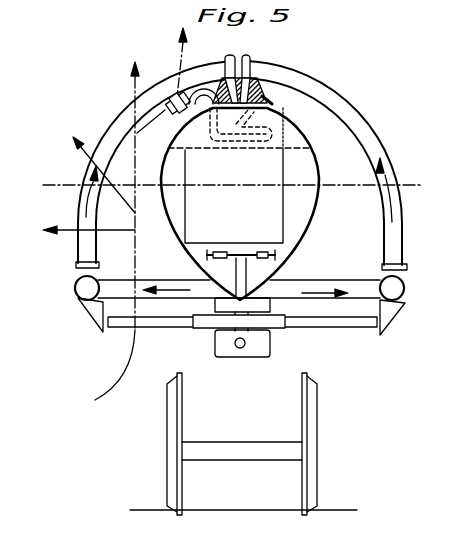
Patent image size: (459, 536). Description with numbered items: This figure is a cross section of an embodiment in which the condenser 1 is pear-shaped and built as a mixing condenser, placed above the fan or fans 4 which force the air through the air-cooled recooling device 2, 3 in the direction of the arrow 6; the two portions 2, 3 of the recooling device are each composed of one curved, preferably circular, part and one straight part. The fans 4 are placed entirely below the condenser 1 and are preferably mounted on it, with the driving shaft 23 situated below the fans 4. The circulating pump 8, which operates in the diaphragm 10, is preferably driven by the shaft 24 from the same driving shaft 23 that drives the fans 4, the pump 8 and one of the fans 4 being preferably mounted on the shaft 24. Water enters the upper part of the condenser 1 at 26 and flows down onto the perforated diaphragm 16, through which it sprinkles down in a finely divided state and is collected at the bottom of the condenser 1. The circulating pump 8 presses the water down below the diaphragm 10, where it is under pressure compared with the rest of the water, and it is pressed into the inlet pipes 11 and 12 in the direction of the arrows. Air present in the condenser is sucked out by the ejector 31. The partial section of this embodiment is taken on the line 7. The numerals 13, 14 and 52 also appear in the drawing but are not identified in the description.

The condenser 1 is at (316, 174).
The recooling device portion 2 is at (116, 129).
The recooling device portion 3 is at (327, 92).
The fan 4 is at (355, 324).
The arrow 6 is at (126, 367).
The section line 7 is at (231, 188).
The circulating pump 8 is at (265, 257).
The diaphragm 10 is at (273, 243).
The inlet pipe 11 is at (143, 285).
The inlet pipe 12 is at (322, 286).
The left roller 13 is at (85, 288).
The right roller 14 is at (397, 288).
The perforated diaphragm 16 is at (296, 147).
The driving shaft 23 is at (240, 348).
The shaft 24 is at (236, 272).
The water inlet 26 is at (232, 108).
The ejector 31 is at (175, 92).
The siphon tube 52 is at (247, 142).